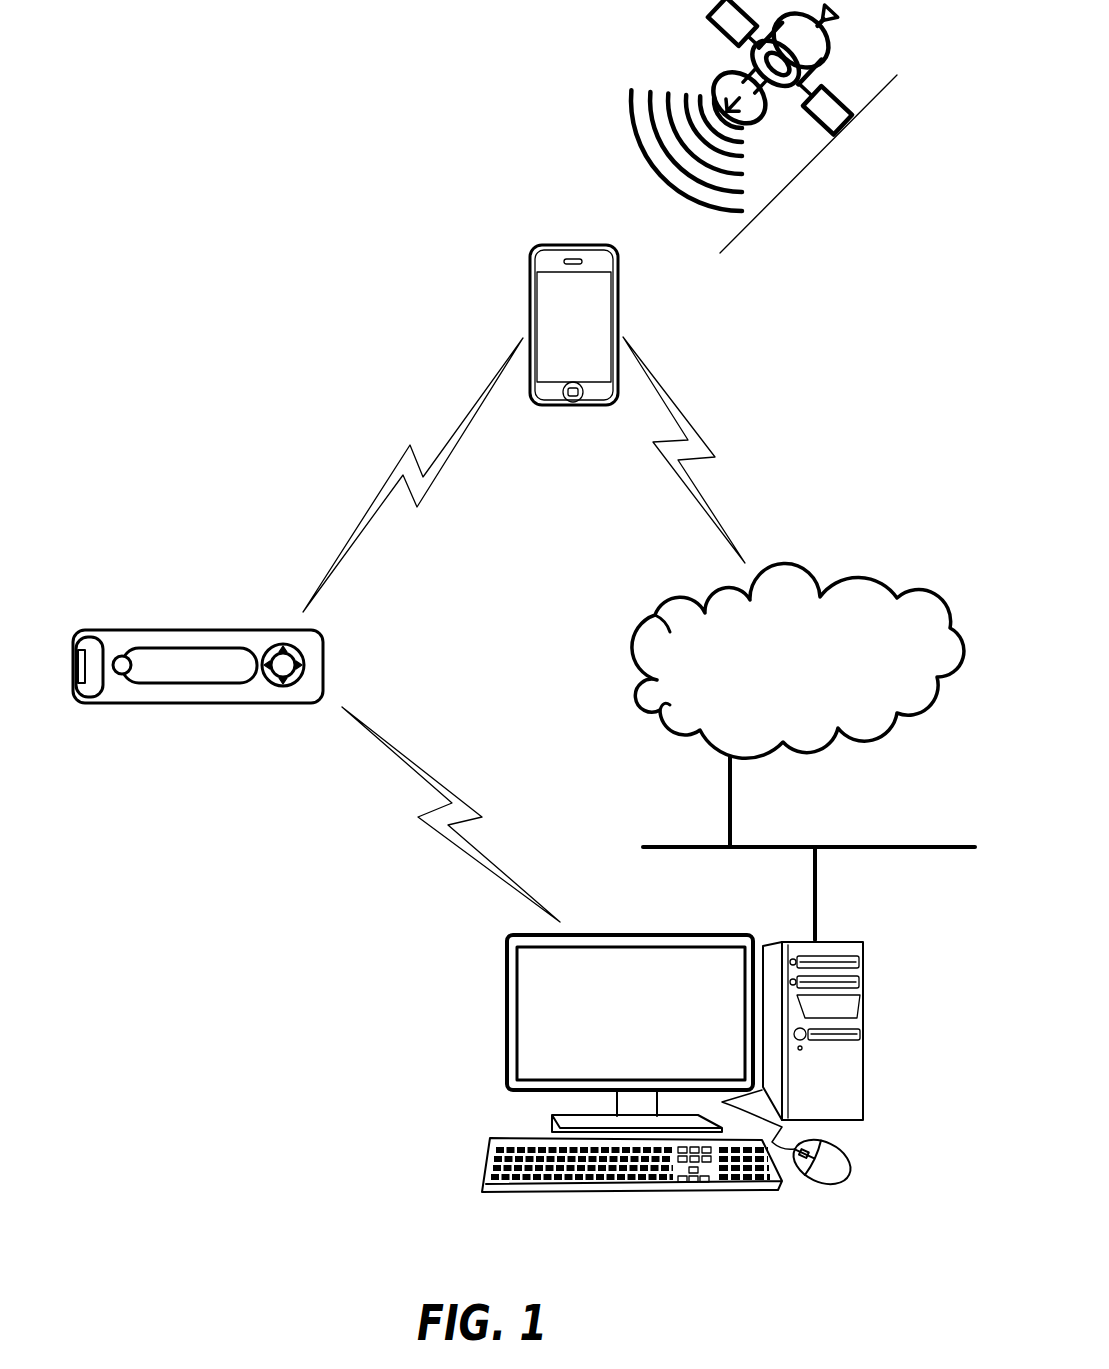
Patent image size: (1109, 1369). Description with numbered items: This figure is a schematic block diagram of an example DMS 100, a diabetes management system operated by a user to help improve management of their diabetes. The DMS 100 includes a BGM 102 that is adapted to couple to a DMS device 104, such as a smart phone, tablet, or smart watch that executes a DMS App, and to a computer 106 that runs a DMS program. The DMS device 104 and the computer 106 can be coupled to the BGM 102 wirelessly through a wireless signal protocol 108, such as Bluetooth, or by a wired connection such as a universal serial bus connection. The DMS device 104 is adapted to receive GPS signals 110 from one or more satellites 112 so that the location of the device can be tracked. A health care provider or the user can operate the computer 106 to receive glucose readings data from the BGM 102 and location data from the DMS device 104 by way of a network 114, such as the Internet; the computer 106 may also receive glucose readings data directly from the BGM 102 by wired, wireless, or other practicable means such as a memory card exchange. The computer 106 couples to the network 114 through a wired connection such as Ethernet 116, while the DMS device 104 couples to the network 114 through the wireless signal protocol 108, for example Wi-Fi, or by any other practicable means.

The DMS 100 is at (191, 193).
The BGM 102 is at (217, 628).
The DMS device 104 is at (553, 408).
The computer 106 is at (733, 1187).
The wireless signal protocol 108 is at (440, 472).
The GPS signals 110 is at (707, 210).
The satellites 112 is at (787, 97).
The network 114 is at (855, 575).
The Ethernet 116 is at (895, 847).